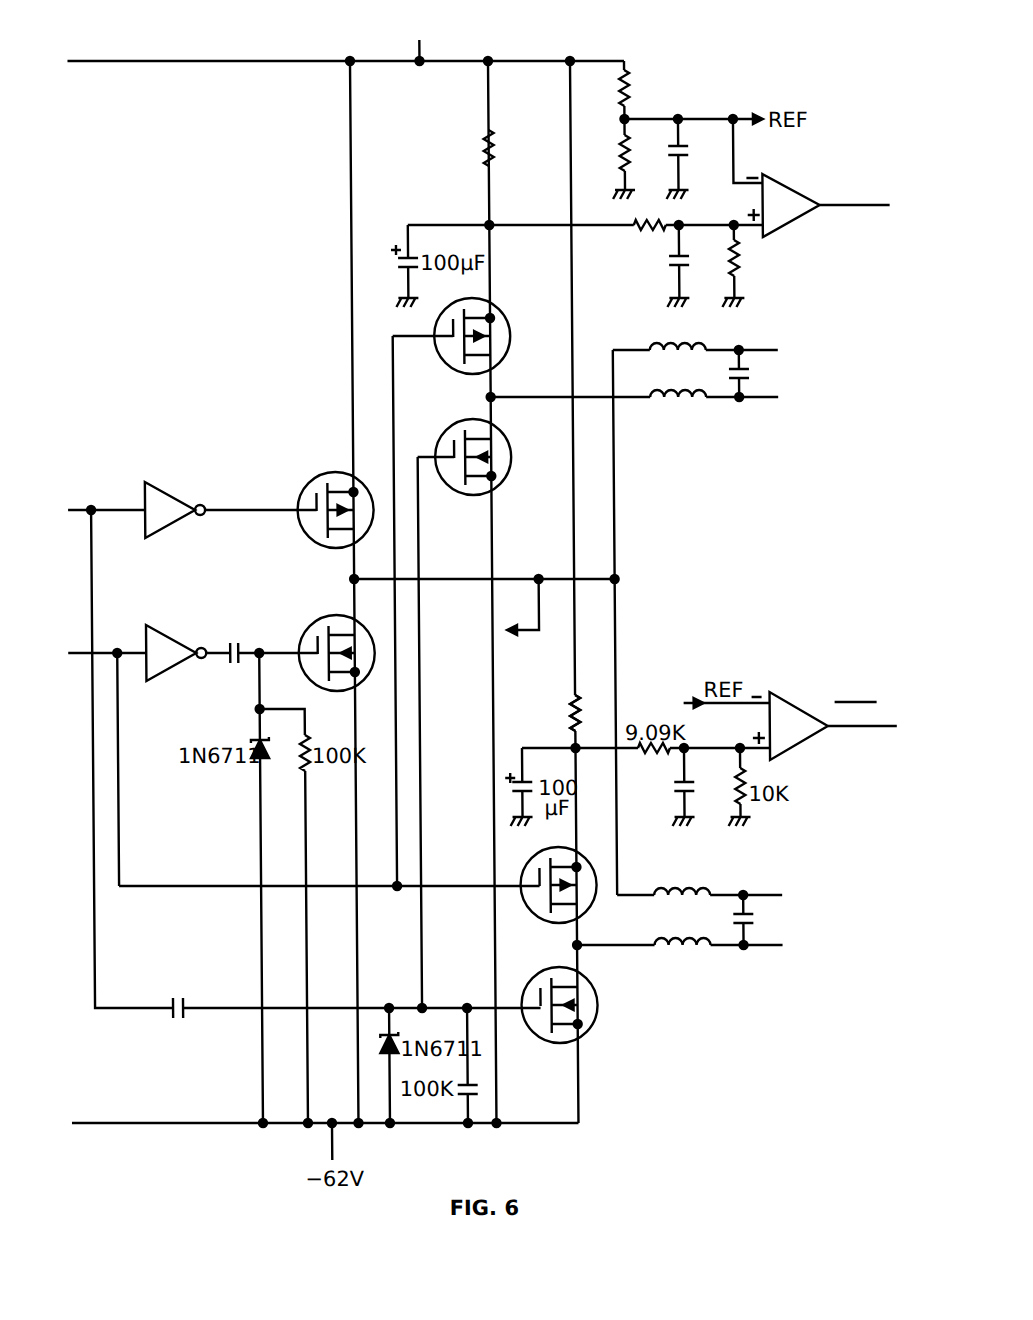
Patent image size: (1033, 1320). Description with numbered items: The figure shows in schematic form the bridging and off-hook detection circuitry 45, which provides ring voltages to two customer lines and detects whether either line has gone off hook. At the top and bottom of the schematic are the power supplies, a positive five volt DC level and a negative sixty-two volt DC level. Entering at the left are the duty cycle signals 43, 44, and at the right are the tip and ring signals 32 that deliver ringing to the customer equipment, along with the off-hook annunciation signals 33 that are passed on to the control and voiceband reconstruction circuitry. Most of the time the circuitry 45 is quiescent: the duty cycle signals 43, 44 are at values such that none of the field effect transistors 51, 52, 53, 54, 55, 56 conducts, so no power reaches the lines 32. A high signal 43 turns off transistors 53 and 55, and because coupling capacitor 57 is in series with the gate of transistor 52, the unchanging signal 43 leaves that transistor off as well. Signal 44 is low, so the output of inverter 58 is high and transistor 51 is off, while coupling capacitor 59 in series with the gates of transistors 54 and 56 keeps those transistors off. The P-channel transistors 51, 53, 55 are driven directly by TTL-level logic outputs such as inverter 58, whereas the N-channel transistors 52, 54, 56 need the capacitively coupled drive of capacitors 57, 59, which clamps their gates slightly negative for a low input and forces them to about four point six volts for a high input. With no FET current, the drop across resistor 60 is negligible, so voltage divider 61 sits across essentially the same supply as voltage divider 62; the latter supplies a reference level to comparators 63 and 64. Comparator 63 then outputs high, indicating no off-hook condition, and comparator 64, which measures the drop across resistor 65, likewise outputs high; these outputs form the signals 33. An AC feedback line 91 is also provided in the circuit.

The tip and ring signals 32 is at (836, 333).
The off-hook annunciation signals 33 is at (856, 207).
The duty cycle signal 43 is at (98, 650).
The duty cycle signal 44 is at (97, 506).
The bridging and off-hook detection circuitry 45 is at (533, 45).
The field effect transistor 51 is at (319, 472).
The field effect transistor 52 is at (322, 612).
The field effect transistor 53 is at (496, 307).
The field effect transistor 54 is at (505, 436).
The field effect transistor 55 is at (573, 858).
The field effect transistor 56 is at (592, 1003).
The coupling capacitor 57 is at (222, 664).
The inverter 58 is at (171, 490).
The coupling capacitor 59 is at (170, 1022).
The resistor 60 is at (484, 153).
The voltage divider 61 is at (650, 233).
The voltage divider 62 is at (626, 150).
The comparator 63 is at (792, 186).
The comparator 64 is at (787, 702).
The resistor 65 is at (574, 712).
The AC feedback line 91 is at (531, 607).